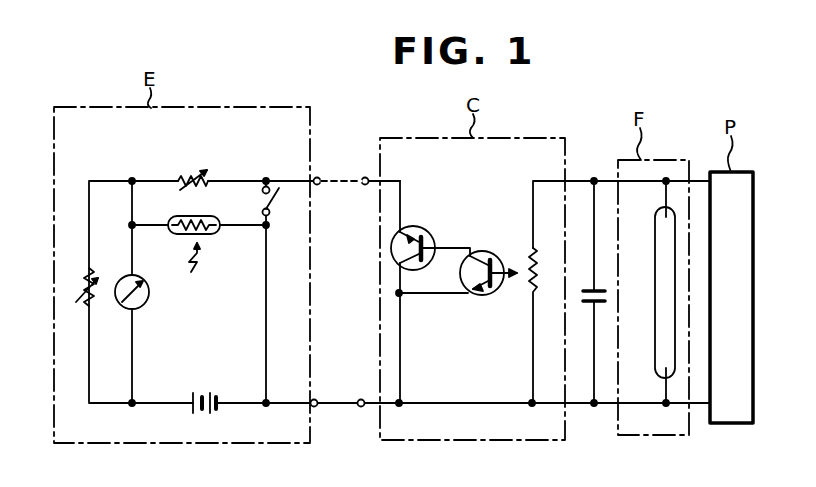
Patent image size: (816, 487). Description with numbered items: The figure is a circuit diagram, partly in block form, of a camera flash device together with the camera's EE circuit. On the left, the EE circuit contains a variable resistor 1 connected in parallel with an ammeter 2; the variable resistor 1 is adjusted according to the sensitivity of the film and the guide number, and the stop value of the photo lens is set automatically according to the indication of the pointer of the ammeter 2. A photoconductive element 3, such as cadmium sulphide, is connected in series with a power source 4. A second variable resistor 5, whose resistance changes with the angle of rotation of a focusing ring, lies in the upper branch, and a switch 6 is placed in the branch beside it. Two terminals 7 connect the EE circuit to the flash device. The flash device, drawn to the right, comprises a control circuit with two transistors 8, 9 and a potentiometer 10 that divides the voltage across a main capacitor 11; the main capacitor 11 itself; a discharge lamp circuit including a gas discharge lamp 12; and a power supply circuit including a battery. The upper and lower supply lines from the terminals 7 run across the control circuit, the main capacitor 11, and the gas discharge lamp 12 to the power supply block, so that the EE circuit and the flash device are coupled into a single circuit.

The variable resistor 1 is at (82, 282).
The ammeter 2 is at (144, 283).
The photoconductive element 3 is at (219, 221).
The power source 4 is at (201, 391).
The variable resistor 5 is at (191, 179).
The switch 6 is at (273, 197).
The terminals 7 is at (318, 178).
The transistor 8 is at (420, 227).
The transistor 9 is at (481, 249).
The potentiometer 10 is at (538, 264).
The main capacitor 11 is at (588, 291).
The gas discharge lamp 12 is at (655, 258).